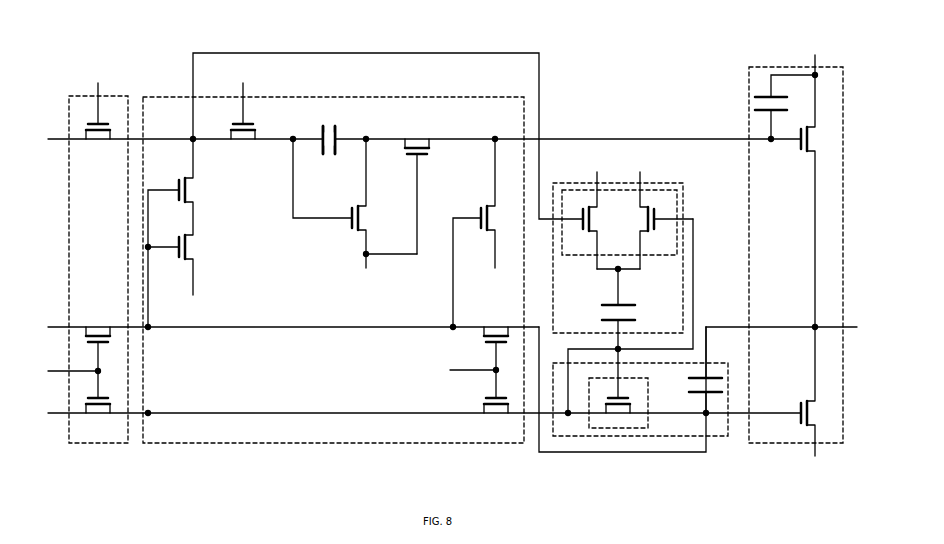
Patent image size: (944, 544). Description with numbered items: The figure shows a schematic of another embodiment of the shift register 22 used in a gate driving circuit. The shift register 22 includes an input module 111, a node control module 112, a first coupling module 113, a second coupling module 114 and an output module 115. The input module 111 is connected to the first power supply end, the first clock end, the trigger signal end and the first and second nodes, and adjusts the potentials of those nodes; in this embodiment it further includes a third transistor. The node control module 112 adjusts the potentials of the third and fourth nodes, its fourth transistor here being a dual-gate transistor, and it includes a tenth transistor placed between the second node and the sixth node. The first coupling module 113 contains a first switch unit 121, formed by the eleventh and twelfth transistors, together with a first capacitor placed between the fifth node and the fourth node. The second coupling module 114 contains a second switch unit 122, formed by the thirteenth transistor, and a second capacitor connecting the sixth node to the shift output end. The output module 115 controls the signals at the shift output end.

The shift register 22 is at (39, 94).
The input module 111 is at (69, 215).
The node control module 112 is at (352, 96).
The first coupling module 113 is at (658, 182).
The second coupling module 114 is at (723, 442).
The output module 115 is at (845, 204).
The first switch unit 121 is at (677, 212).
The second switch unit 122 is at (618, 436).